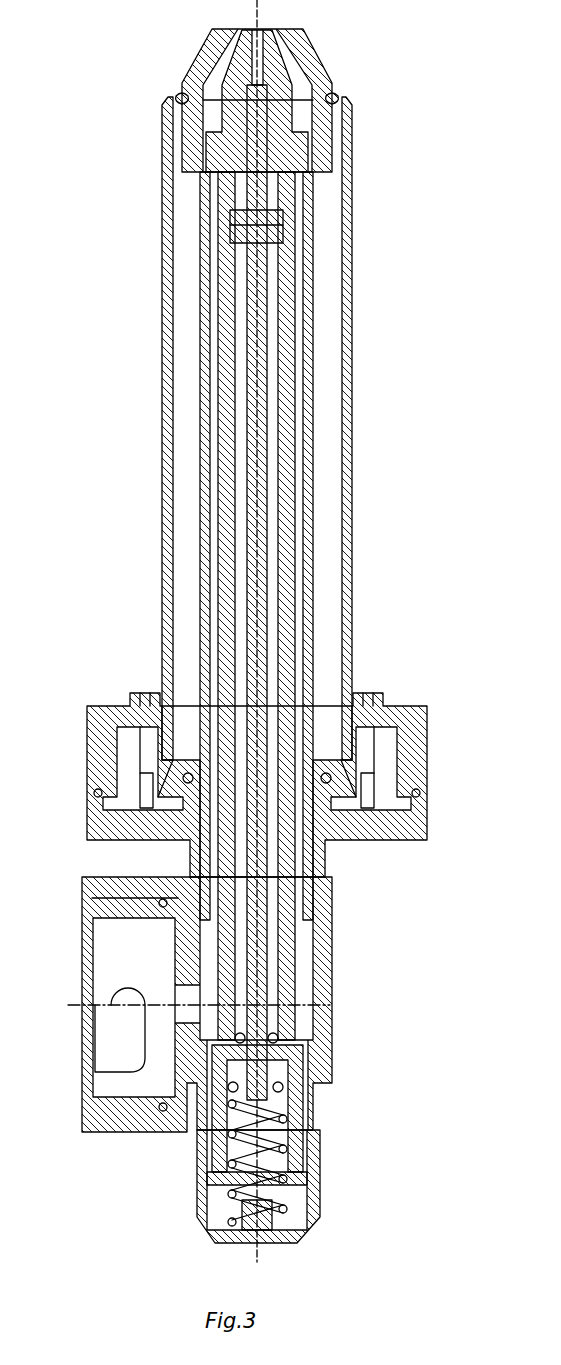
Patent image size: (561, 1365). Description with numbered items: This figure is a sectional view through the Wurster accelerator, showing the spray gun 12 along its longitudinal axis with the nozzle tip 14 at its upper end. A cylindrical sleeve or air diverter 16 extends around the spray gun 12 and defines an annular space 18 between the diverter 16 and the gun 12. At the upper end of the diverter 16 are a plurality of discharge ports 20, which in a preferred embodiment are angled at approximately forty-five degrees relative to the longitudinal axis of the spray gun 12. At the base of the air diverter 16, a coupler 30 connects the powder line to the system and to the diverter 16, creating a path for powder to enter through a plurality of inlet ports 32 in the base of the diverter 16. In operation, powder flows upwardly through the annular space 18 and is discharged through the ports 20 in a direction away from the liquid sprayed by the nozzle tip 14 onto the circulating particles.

The spray gun 12 is at (440, 313).
The nozzle tip 14 is at (248, 29).
The air diverter 16 is at (353, 248).
The annular space 18 is at (198, 441).
The discharge ports 20 is at (176, 100).
The coupler 30 is at (102, 877).
The inlet ports 32 is at (168, 755).